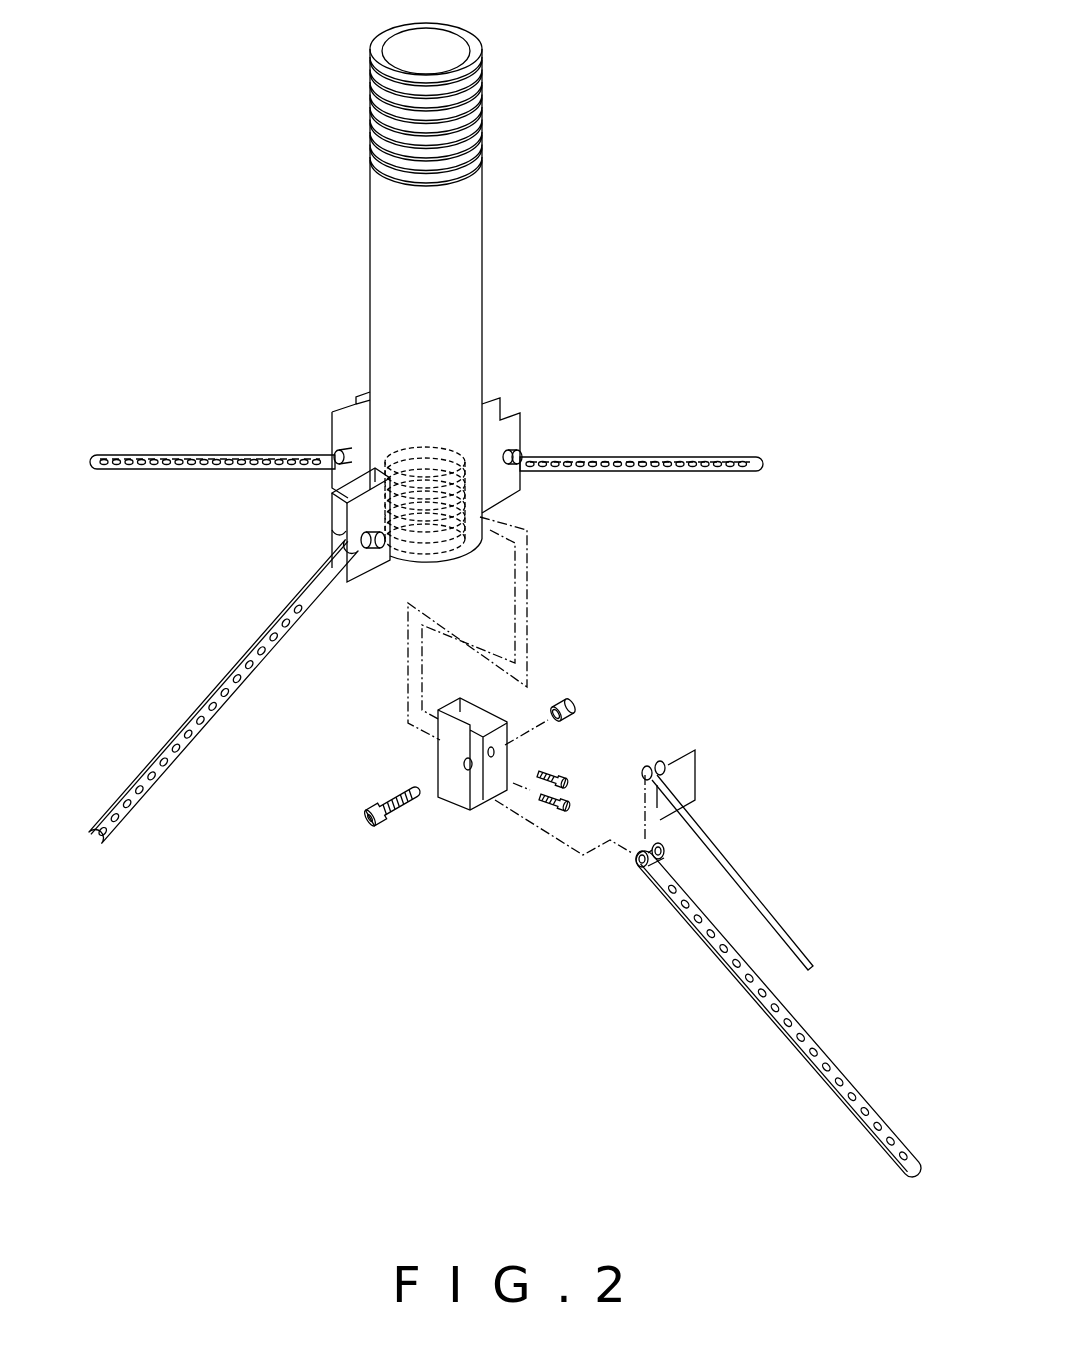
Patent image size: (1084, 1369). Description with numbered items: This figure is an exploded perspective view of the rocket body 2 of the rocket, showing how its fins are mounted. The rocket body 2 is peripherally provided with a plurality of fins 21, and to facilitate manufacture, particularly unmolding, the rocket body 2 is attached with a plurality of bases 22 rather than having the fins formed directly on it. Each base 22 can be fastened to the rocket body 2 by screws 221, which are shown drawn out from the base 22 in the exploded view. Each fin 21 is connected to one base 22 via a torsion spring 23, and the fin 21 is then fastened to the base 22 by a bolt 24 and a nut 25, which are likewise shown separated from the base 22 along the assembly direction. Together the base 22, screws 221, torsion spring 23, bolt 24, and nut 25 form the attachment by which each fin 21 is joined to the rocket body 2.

The rocket body 2 is at (463, 261).
The fin 21 is at (830, 1062).
The base 22 is at (460, 793).
The screw 221 is at (567, 783).
The torsion spring 23 is at (742, 873).
The bolt 24 is at (386, 833).
The nut 25 is at (568, 700).